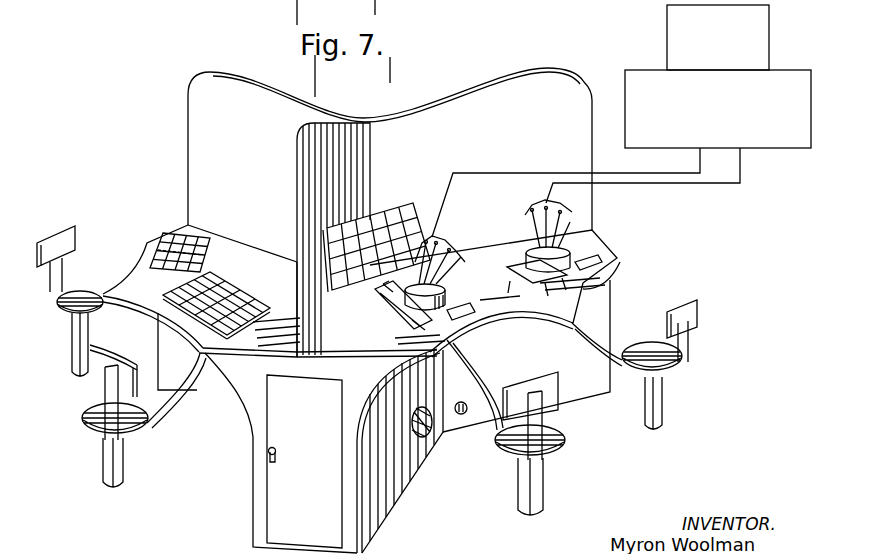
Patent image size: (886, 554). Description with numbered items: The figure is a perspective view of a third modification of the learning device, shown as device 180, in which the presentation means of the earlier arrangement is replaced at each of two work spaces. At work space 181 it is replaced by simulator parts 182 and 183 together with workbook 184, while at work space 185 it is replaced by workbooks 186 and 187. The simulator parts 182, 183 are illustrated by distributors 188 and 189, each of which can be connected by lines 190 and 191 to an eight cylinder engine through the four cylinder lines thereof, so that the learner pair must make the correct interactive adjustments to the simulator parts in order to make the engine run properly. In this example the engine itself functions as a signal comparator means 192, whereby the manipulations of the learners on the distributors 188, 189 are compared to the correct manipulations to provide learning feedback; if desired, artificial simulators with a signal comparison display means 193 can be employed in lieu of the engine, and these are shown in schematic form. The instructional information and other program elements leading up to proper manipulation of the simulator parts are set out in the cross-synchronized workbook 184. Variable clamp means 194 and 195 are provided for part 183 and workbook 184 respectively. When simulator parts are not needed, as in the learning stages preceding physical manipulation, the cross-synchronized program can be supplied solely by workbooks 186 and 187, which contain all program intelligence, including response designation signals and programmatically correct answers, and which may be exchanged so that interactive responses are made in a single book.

The device 180 is at (152, 112).
The work space 181 is at (497, 93).
The simulator part 182 is at (567, 242).
The simulator part 183 is at (418, 335).
The workbook 184 is at (395, 213).
The work space 185 is at (222, 159).
The workbook 186 is at (180, 230).
The workbook 187 is at (205, 295).
The distributor 188 is at (443, 297).
The distributor 189 is at (520, 255).
The line 190 is at (653, 173).
The line 191 is at (690, 183).
The signal comparator means 192 is at (718, 110).
The signal comparison display means 193 is at (765, 50).
The variable clamp means 194 is at (393, 315).
The variable clamp means 195 is at (528, 282).